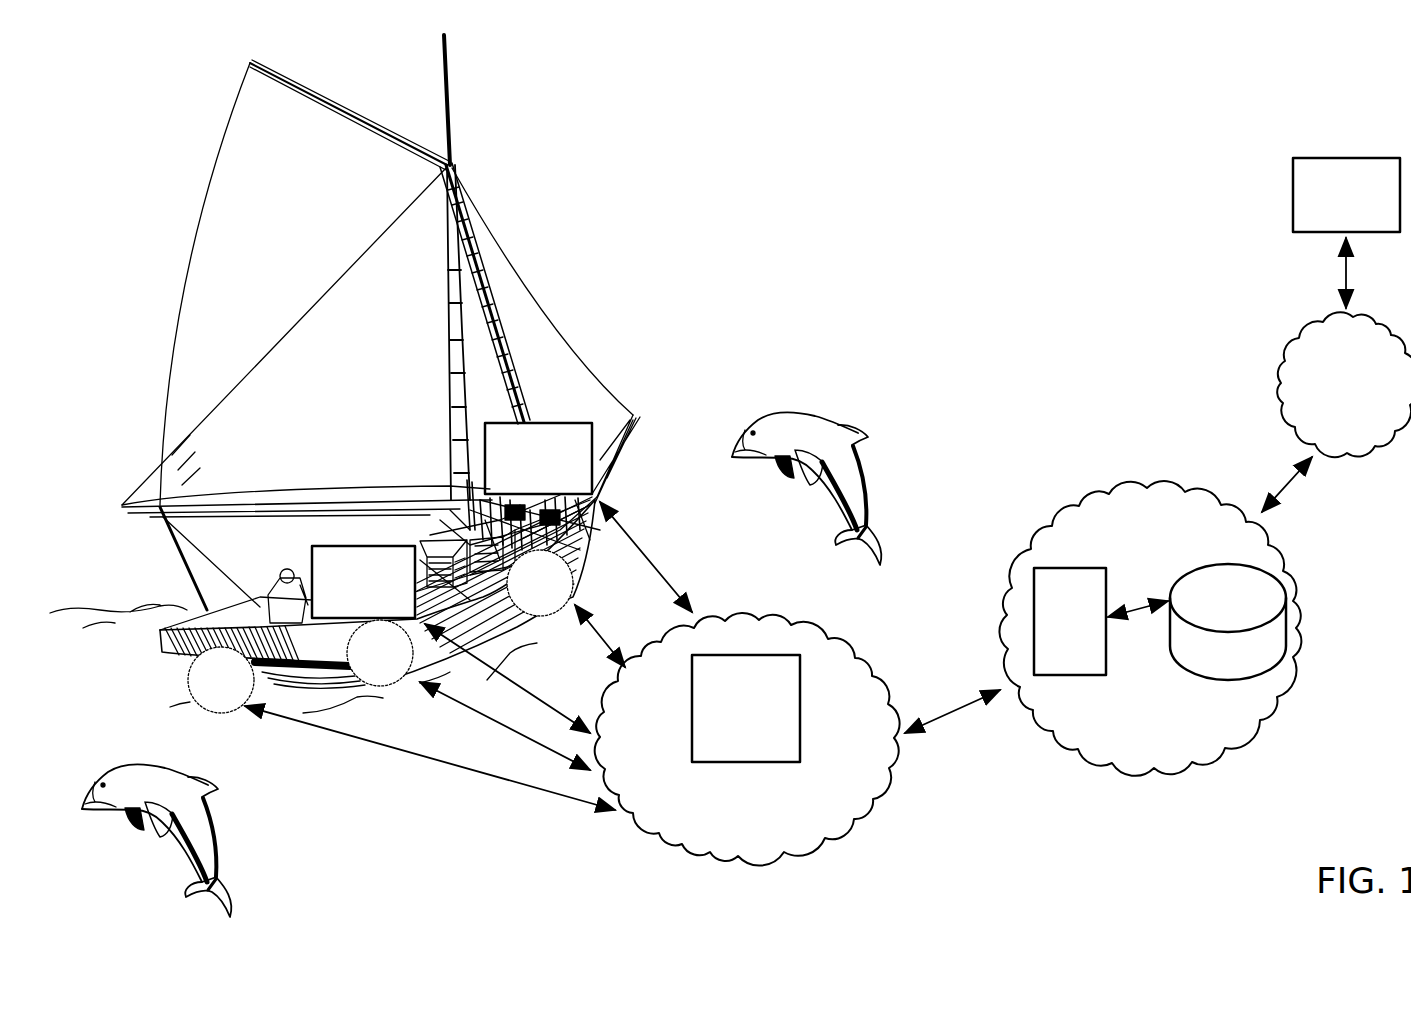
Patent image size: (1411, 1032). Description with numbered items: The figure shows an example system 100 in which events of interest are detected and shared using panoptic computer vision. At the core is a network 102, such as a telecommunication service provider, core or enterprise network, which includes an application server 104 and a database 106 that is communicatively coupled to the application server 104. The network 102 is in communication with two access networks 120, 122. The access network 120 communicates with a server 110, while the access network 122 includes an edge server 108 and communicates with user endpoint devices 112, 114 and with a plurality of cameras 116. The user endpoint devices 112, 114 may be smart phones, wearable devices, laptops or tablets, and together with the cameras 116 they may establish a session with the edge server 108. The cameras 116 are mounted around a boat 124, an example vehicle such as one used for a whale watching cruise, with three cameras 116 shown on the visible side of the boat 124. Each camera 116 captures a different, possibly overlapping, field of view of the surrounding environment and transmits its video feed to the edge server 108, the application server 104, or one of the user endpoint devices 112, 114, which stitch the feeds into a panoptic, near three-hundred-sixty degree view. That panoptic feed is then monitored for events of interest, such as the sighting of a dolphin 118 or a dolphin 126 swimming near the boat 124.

The system 100 is at (122, 74).
The network 102 is at (1137, 742).
The application server 104 is at (1055, 642).
The database 106 is at (1213, 624).
The edge server 108 is at (731, 748).
The server 110 is at (1331, 220).
The user endpoint device 112 is at (523, 484).
The user endpoint device 114 is at (348, 607).
The cameras 116 is at (380, 631).
The dolphin 118 is at (864, 428).
The access network 120 is at (1332, 421).
The access network 122 is at (732, 830).
The boat 124 is at (548, 320).
The dolphin 126 is at (215, 778).